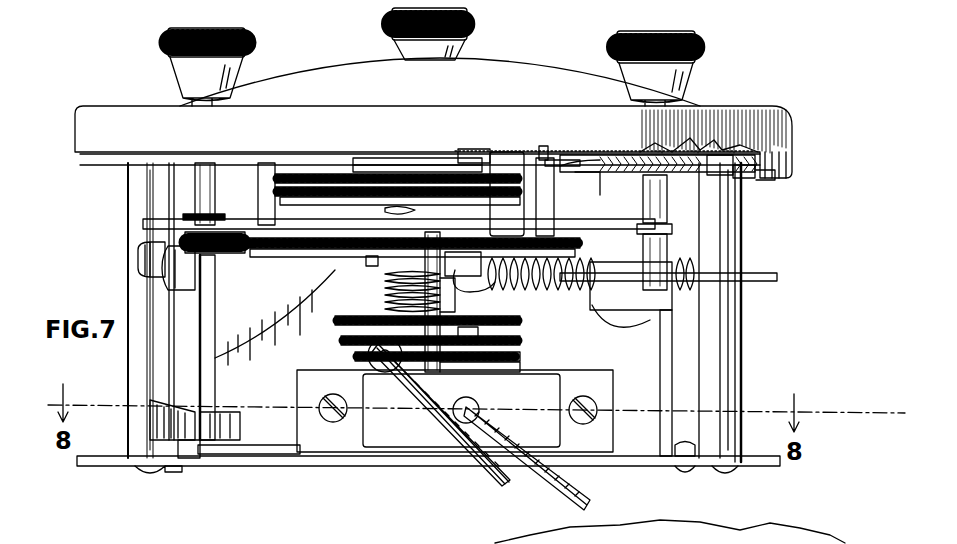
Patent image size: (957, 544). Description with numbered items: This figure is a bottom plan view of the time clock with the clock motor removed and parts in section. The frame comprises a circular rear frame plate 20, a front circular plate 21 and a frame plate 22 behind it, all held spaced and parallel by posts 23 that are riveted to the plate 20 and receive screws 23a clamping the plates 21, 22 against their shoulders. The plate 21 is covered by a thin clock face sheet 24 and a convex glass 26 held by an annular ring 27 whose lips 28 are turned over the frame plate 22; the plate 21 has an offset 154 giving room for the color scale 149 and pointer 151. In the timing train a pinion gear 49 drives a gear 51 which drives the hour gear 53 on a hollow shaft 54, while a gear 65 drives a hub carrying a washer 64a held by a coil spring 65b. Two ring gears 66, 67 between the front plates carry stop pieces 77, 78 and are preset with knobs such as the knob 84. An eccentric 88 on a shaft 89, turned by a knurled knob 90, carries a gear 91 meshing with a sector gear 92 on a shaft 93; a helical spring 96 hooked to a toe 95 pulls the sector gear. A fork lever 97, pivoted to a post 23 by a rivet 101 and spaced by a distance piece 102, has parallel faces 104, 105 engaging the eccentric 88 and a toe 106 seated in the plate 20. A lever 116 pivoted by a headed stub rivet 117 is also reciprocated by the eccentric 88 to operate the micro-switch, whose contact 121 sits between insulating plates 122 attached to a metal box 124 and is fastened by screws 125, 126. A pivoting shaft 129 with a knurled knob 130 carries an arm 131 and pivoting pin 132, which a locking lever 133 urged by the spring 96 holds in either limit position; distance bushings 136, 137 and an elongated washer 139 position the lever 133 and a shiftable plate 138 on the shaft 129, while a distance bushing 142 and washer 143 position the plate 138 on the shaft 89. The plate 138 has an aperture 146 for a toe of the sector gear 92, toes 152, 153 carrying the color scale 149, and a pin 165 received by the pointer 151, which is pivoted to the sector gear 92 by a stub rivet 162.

The rear frame plate 20 is at (753, 468).
The circular plate 21 is at (740, 172).
The frame plate 22 is at (742, 178).
The post or stud 23 is at (130, 369).
The screw 23a is at (742, 148).
The clock face sheet 24 is at (632, 152).
The convex glass 26 is at (340, 74).
The annular ring 27 is at (122, 112).
The lip 28 is at (776, 176).
The pinion gear 49 is at (462, 364).
The gear 51 is at (521, 356).
The hour gear 53 is at (521, 340).
The hollow shaft 54 is at (462, 334).
The washer 64a is at (386, 280).
The gear 65 is at (521, 320).
The coil spring 65b is at (386, 302).
The ring gear 66 is at (295, 176).
The ring gear 67 is at (315, 188).
The stop piece 77 is at (366, 160).
The stop piece 78 is at (396, 163).
The knob 84 is at (468, 23).
The eccentric 88 is at (190, 452).
The shaft 89 is at (217, 296).
The knurled knob 90 is at (172, 44).
The gear 91 is at (183, 242).
The sector gear 92 is at (302, 260).
The shaft 93 is at (426, 330).
The toe 95 is at (476, 286).
The helical spring 96 is at (566, 286).
The fork lever 97 is at (246, 326).
The rivet or screw 101 is at (187, 270).
The hollow distance piece 102 is at (140, 264).
The parallel face 104 is at (172, 418).
The parallel face 105 is at (241, 430).
The toe 106 is at (172, 472).
The lever 116 is at (256, 456).
The headed stub rivet 117 is at (688, 475).
The contact 121 is at (368, 355).
The insulating plate 122 is at (356, 440).
The metal box 124 is at (402, 432).
The screw 125 is at (330, 421).
The screw 126 is at (586, 424).
The pivoting shaft 129 is at (660, 352).
The knurled knob 130 is at (697, 51).
The arm 131 is at (630, 325).
The pivoting pin 132 is at (600, 282).
The locking lever 133 is at (755, 282).
The distance bushing 136 is at (668, 248).
The distance bushing 137 is at (668, 208).
The shiftable plate 138 is at (150, 222).
The elongated washer 139 is at (668, 226).
The distance bushing 142 is at (205, 175).
The washer 143 is at (216, 216).
The aperture 146 is at (385, 212).
The color scale 149 is at (558, 160).
The pointer 151 is at (506, 178).
The toe 152 is at (262, 185).
The toe 153 is at (545, 178).
The offset 154 is at (466, 157).
The stub rivet 162 is at (452, 272).
The pin 165 is at (368, 264).